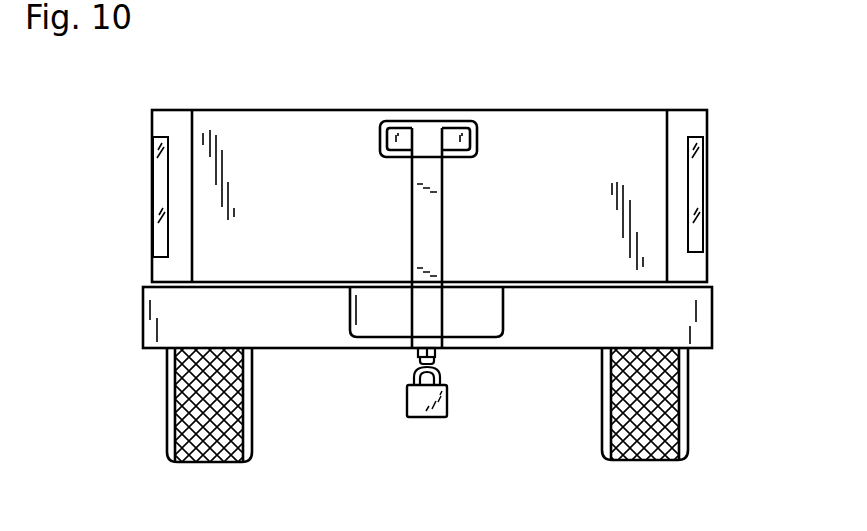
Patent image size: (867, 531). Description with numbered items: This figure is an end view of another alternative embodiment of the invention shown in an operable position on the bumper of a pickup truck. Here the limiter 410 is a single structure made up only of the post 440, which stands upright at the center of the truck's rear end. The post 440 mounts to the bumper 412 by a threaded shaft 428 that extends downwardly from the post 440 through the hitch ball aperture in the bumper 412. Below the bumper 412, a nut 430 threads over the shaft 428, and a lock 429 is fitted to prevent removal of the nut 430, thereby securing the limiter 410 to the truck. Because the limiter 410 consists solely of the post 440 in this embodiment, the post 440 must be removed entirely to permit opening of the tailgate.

The limiter 410 is at (470, 223).
The bumper 412 is at (688, 327).
The post 440 is at (416, 223).
The threaded shaft 428 is at (417, 367).
The lock 429 is at (415, 416).
The nut 430 is at (436, 352).